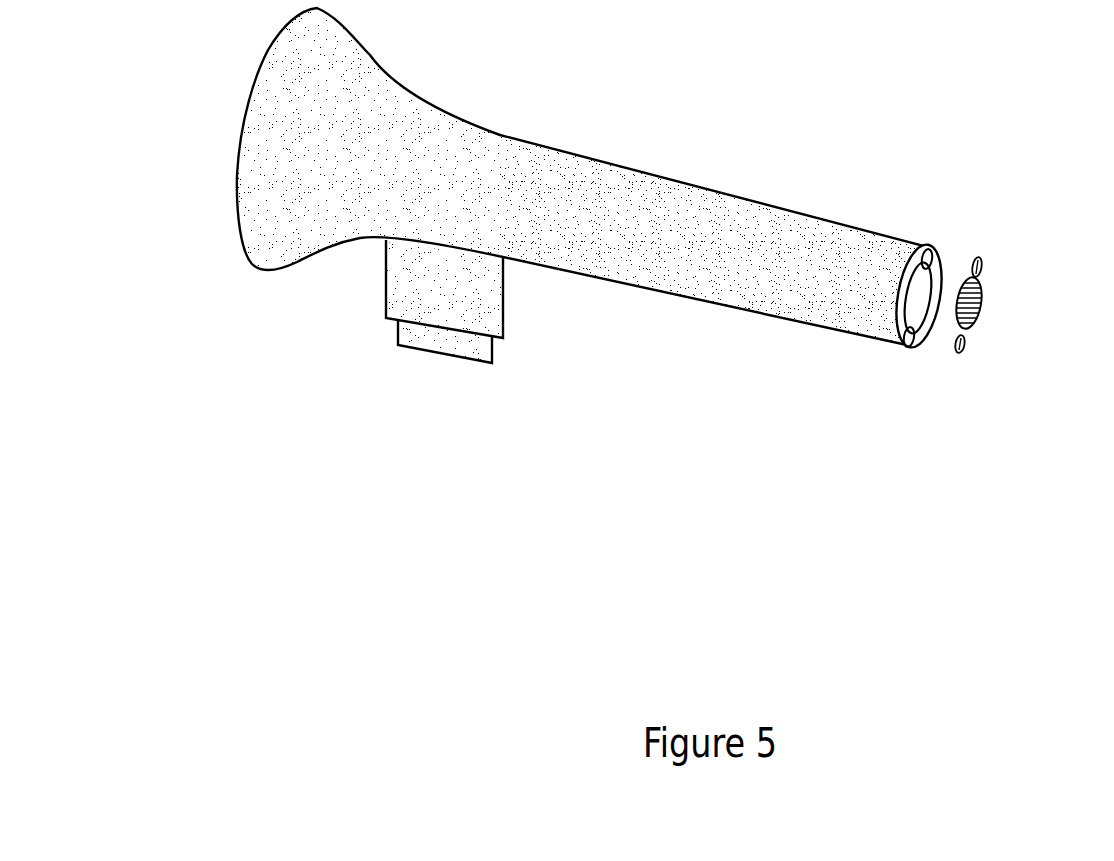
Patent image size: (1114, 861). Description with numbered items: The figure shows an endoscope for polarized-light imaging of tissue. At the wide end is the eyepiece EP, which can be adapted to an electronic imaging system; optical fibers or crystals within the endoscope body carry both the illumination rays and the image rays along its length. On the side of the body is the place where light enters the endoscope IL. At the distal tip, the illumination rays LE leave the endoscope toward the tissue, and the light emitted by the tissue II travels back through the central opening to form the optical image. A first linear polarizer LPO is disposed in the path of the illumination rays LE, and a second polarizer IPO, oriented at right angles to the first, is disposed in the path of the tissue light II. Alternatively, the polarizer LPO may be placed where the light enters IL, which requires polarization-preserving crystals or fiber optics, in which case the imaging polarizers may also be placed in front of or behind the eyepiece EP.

The eyepiece EP is at (279, 30).
The light entry point of the endoscope IL is at (439, 392).
The illumination rays LE is at (929, 247).
The light emitted by the tissue II is at (913, 298).
The second polarizer IPO is at (982, 305).
The first linear polarizer LPO is at (982, 265).